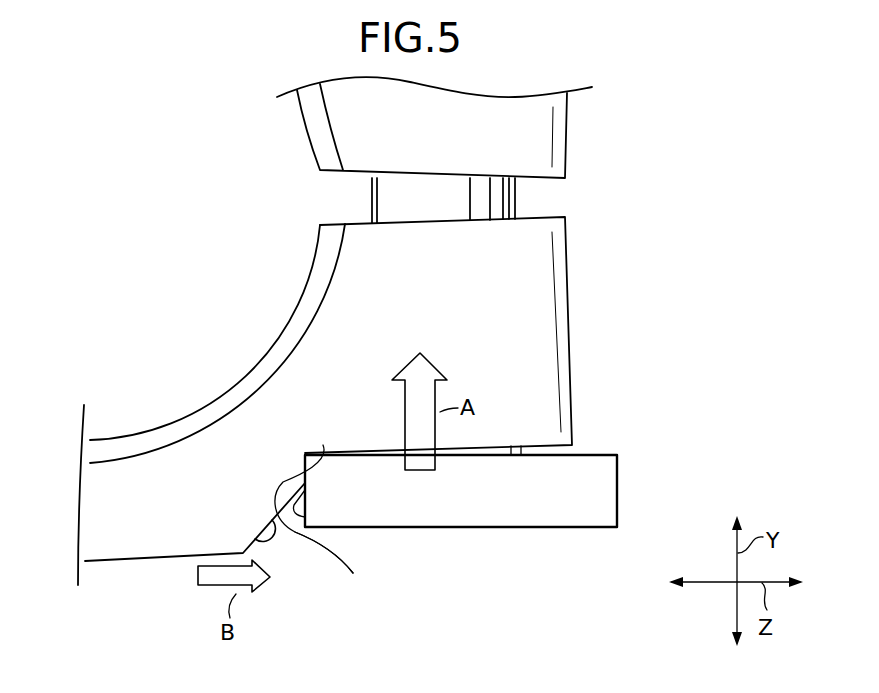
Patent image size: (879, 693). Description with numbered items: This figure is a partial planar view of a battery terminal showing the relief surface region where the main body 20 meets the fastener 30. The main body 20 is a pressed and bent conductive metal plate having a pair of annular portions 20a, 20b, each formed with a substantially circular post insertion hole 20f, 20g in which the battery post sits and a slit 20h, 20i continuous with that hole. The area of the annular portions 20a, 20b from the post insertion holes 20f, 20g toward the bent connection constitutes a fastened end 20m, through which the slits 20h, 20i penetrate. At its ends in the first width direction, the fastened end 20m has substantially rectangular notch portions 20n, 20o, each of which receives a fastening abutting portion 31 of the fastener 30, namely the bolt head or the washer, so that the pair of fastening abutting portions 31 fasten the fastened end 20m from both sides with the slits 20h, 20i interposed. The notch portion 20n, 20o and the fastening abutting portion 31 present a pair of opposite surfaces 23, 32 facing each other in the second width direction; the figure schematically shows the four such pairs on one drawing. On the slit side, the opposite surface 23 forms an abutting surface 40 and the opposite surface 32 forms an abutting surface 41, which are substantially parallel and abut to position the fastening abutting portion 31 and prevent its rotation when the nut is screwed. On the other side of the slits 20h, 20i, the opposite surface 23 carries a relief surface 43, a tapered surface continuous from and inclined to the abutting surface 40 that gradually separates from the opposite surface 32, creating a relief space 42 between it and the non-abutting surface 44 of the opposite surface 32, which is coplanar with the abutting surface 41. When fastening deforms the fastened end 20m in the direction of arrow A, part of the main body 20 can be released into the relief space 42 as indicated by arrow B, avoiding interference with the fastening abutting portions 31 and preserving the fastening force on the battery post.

The main body 20 is at (318, 373).
The annular portion 20a is at (335, 331).
The annular portion 20b is at (100, 562).
The post insertion hole 20f is at (206, 343).
The post insertion hole 20g is at (148, 430).
The slit 20h is at (533, 200).
The slit 20i is at (430, 178).
The fastened end 20m is at (530, 312).
The notch portion 20n is at (627, 468).
The notch portion 20o is at (532, 452).
The opposite surface 23 is at (260, 410).
The abutting surface 40 is at (323, 445).
The relief surface 43 is at (257, 537).
The abutting surface 41 is at (329, 571).
The non-abutting surface 44 is at (305, 517).
The relief space 42 is at (288, 535).
The opposite surface 32 is at (364, 567).
The fastening abutting portion 31 is at (461, 541).
The fastener 30 is at (552, 527).